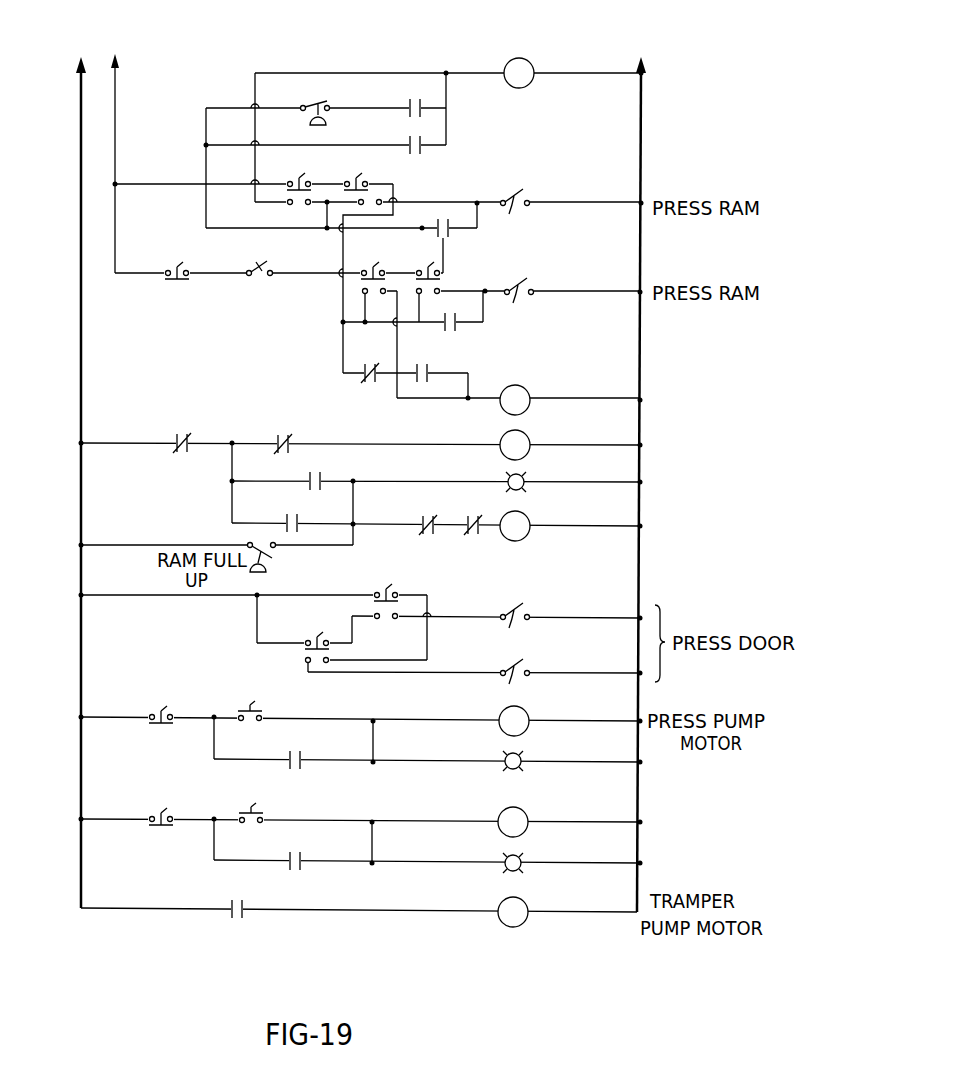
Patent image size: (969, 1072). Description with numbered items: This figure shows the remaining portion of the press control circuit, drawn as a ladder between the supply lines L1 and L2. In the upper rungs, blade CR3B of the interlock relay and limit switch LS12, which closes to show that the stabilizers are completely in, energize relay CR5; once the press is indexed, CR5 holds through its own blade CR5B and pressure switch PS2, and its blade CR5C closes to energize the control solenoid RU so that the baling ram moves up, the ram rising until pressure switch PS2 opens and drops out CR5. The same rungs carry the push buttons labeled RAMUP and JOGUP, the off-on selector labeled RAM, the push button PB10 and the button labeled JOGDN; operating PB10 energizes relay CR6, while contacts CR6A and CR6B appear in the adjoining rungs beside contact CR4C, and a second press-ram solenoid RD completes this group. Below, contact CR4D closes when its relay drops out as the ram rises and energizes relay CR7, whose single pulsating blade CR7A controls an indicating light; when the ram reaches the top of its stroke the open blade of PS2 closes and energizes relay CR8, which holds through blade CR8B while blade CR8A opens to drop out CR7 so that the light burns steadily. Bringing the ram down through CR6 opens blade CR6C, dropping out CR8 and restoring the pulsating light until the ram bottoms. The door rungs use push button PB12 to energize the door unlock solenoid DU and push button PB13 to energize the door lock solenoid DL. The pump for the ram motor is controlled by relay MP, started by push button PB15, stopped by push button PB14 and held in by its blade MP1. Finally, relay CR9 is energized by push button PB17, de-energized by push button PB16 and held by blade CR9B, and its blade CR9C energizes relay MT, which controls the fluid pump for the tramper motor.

The power line L1 is at (76, 472).
The power line L2 is at (643, 474).
The pressure switch PS2 is at (284, 325).
The blade of relay CR5 CR5B is at (419, 99).
The blade of relay CR3 CR3B is at (411, 136).
The relay CR5 is at (531, 69).
The ram up push button RAMUP is at (307, 181).
The jog up push button JOGUP is at (389, 181).
The control solenoid RU is at (511, 191).
The blade of relay CR5 CR5C is at (432, 369).
The ram off/on selector switch RAM is at (170, 262).
The limit switch LS12 is at (257, 256).
The push button PB10 is at (372, 268).
The jog down push button JOGDN is at (439, 268).
The ram down solenoid valve RD is at (519, 280).
The relay contact CR6A is at (448, 314).
The relay contact CR4C is at (368, 365).
The relay contact CR6B is at (428, 365).
The relay CR6 is at (529, 394).
The contact of relay CR4 CR4D is at (182, 432).
The blade of relay CR8 CR8A is at (287, 432).
The relay CR7 is at (529, 440).
The pulsating blade of relay CR7 CR7A is at (313, 472).
The blade of relay CR8 CR8B is at (285, 515).
The blade of relay CR6 CR6C is at (480, 516).
The relay CR8 is at (529, 521).
The push button PB12 is at (382, 592).
The push button PB13 is at (316, 640).
The door unlock solenoid DU is at (524, 608).
The door lock solenoid DL is at (526, 664).
The push button PB14 is at (157, 705).
The push button PB15 is at (248, 702).
The relay MP is at (514, 721).
The blade of relay MP MP1 is at (294, 749).
The push button PB16 is at (166, 808).
The push button PB17 is at (253, 803).
The relay CR9 is at (527, 817).
The holding blade of relay CR9 CR9B is at (295, 852).
The blade of relay CR9 CR9C is at (229, 902).
The relay MT is at (513, 912).